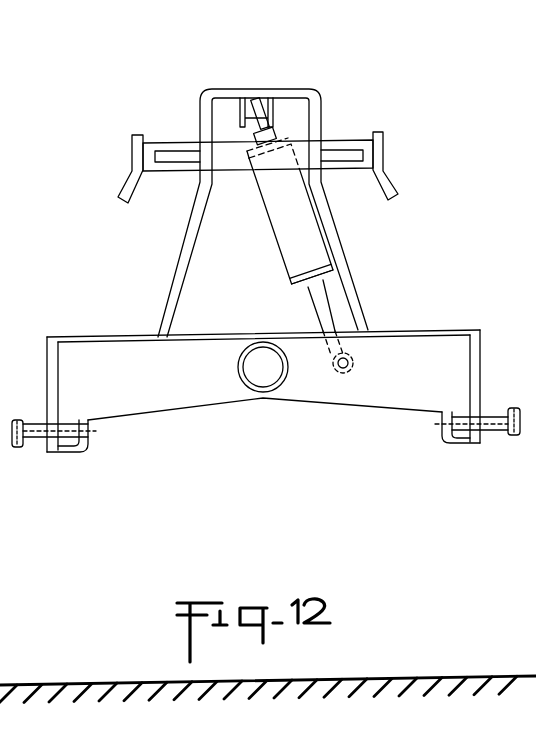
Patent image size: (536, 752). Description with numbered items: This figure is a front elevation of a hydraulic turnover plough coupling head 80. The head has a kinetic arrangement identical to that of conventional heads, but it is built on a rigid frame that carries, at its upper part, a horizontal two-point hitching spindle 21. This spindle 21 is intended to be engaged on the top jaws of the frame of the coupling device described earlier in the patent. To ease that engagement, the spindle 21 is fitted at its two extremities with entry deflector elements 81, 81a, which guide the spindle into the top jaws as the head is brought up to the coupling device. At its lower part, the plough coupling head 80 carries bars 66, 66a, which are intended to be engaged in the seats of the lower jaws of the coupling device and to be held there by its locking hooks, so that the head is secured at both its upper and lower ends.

The horizontal two-point hitching spindle 21 is at (328, 141).
The hydraulic turnover plough coupling head 80 is at (176, 292).
The entry deflector element 81 is at (390, 178).
The entry deflector element 81a is at (118, 196).
The bar 66 is at (497, 424).
The bar 66a is at (37, 436).